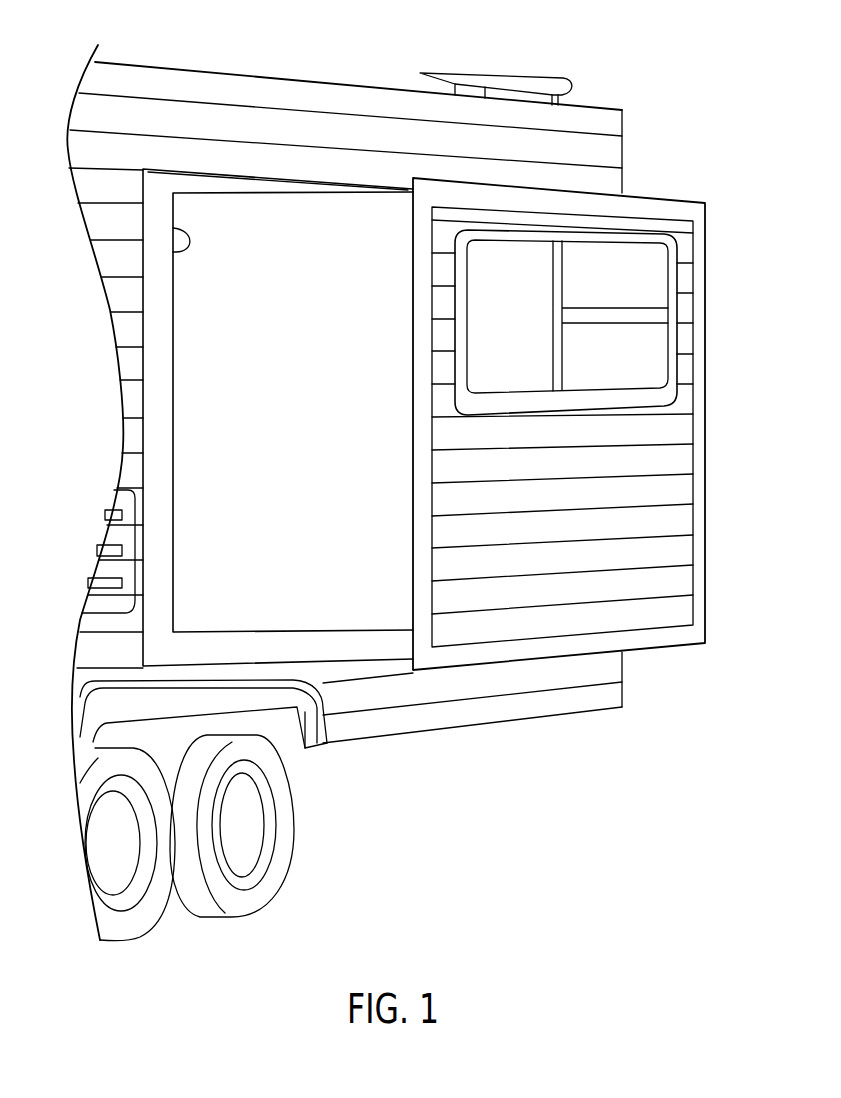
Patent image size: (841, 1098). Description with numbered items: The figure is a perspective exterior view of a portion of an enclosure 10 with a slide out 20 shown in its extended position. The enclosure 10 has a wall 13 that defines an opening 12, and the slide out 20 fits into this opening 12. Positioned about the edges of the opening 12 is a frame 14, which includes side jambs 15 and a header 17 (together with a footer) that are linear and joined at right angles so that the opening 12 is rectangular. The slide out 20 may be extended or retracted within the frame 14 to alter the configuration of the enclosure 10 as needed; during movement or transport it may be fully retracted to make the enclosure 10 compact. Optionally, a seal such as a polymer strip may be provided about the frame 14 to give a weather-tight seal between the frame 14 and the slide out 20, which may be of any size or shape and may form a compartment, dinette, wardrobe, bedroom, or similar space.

The enclosure 10 is at (239, 105).
The opening 12 is at (176, 232).
The wall 13 is at (123, 265).
The frame 14 is at (152, 435).
The side jambs 15 is at (160, 390).
The header 17 is at (207, 183).
The slide out 20 is at (686, 251).